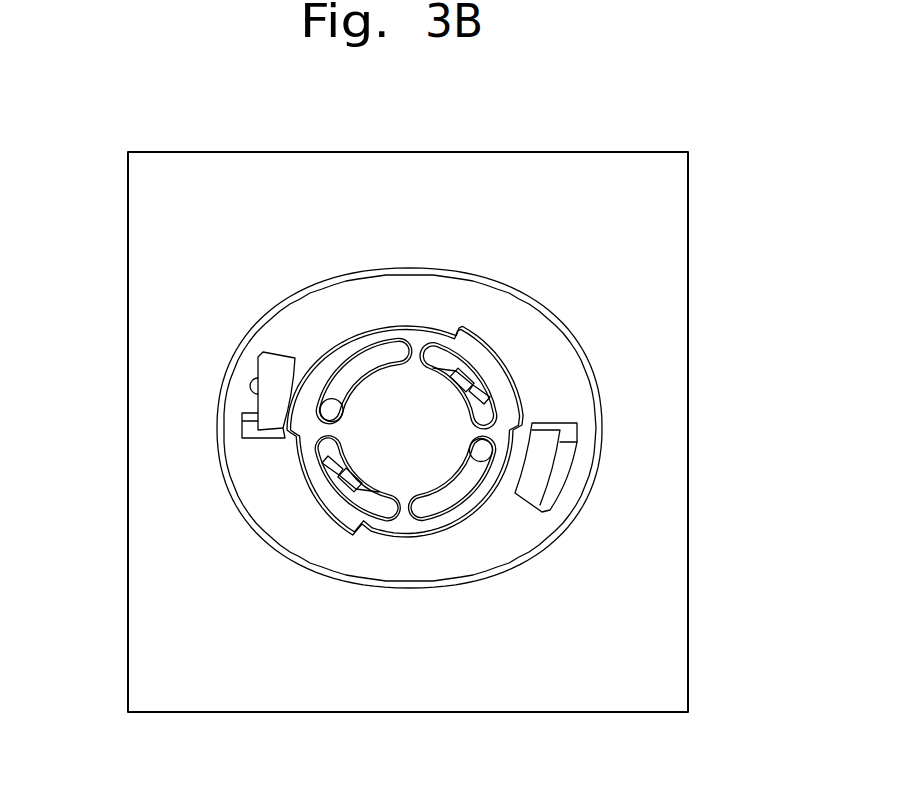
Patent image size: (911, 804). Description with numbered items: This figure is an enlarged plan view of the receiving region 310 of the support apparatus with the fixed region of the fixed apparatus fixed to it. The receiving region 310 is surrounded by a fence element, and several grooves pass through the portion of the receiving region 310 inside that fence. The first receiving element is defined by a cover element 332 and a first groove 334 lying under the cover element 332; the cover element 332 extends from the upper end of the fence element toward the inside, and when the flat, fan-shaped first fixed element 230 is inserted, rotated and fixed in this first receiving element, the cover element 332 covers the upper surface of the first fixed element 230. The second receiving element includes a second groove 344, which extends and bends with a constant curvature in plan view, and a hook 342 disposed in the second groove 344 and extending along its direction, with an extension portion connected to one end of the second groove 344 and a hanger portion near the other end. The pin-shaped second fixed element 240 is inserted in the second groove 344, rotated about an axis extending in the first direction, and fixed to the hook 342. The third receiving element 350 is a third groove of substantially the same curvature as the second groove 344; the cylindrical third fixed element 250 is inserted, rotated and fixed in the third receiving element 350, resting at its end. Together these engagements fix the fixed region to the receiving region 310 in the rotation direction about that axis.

The receiving region 310 is at (672, 299).
The first fixed element 230 is at (277, 372).
The first groove 334 is at (250, 377).
The cover element 332 is at (257, 412).
The second groove 344 is at (313, 447).
The hook 342 is at (337, 473).
The second fixed element 240 is at (358, 488).
The third receiving element 350 is at (425, 517).
The third fixed element 250 is at (483, 452).